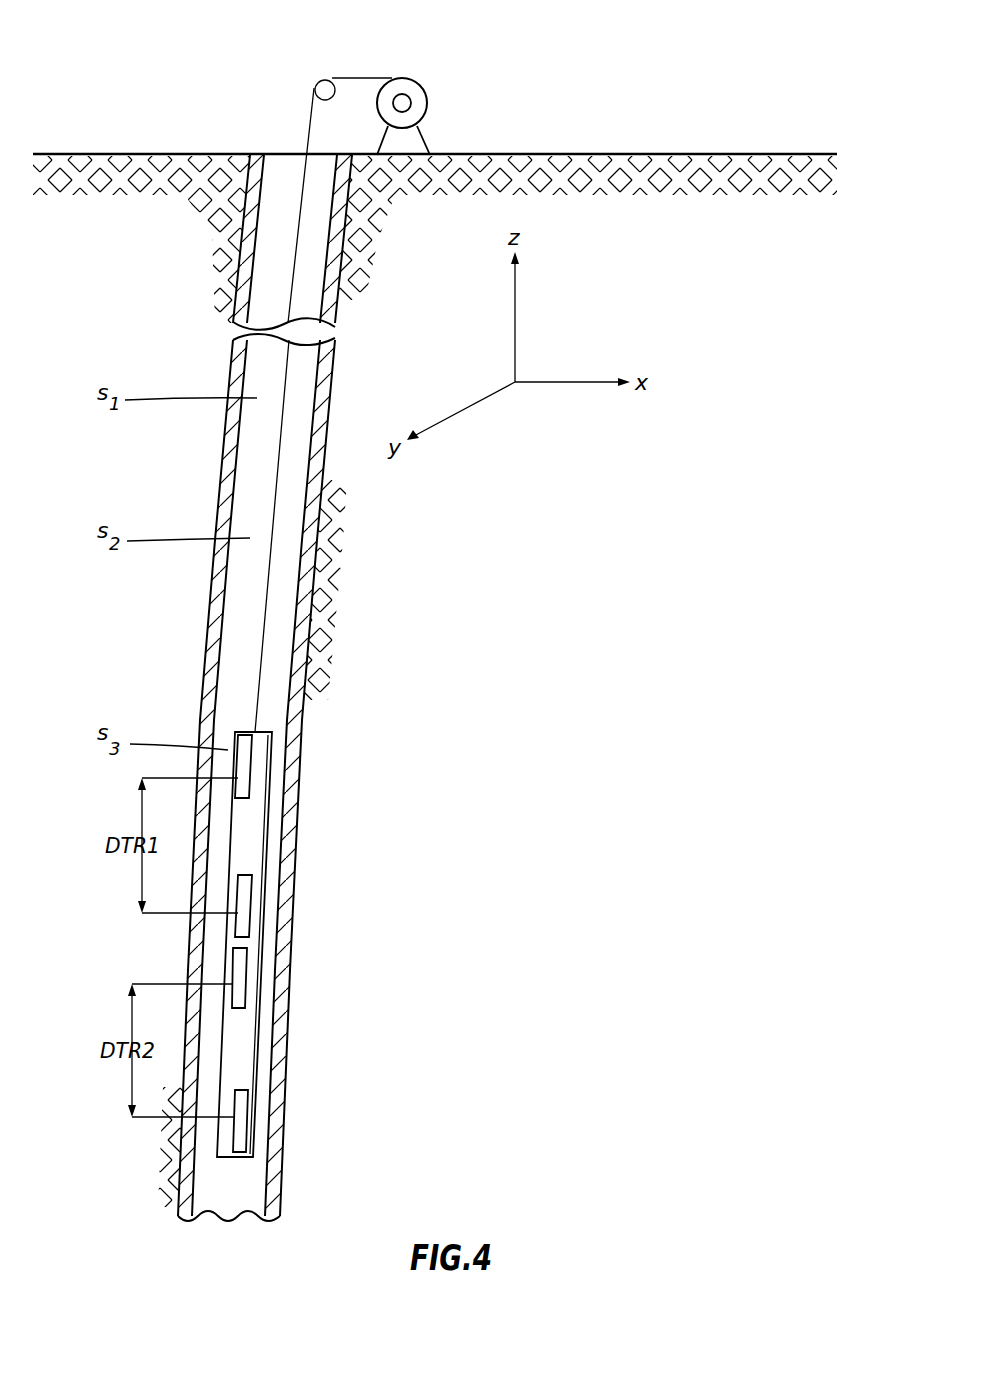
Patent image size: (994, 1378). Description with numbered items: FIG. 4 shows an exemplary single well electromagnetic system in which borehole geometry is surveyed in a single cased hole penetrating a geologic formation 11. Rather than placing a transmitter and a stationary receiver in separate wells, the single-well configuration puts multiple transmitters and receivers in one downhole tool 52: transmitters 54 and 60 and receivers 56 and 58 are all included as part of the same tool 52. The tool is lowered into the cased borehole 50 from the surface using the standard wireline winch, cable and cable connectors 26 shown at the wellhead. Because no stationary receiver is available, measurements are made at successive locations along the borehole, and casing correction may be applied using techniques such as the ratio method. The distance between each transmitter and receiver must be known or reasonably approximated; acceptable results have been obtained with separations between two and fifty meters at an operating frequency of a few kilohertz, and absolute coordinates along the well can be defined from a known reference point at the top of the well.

The geologic formation 11 is at (571, 641).
The wireline winches, cables and cable connectors 26 is at (427, 90).
The borehole casing 50 is at (322, 470).
The tool 52 is at (265, 735).
The transmitter 54 is at (252, 778).
The receiver 56 is at (253, 895).
The receiver 58 is at (248, 968).
The transmitter 60 is at (250, 1105).